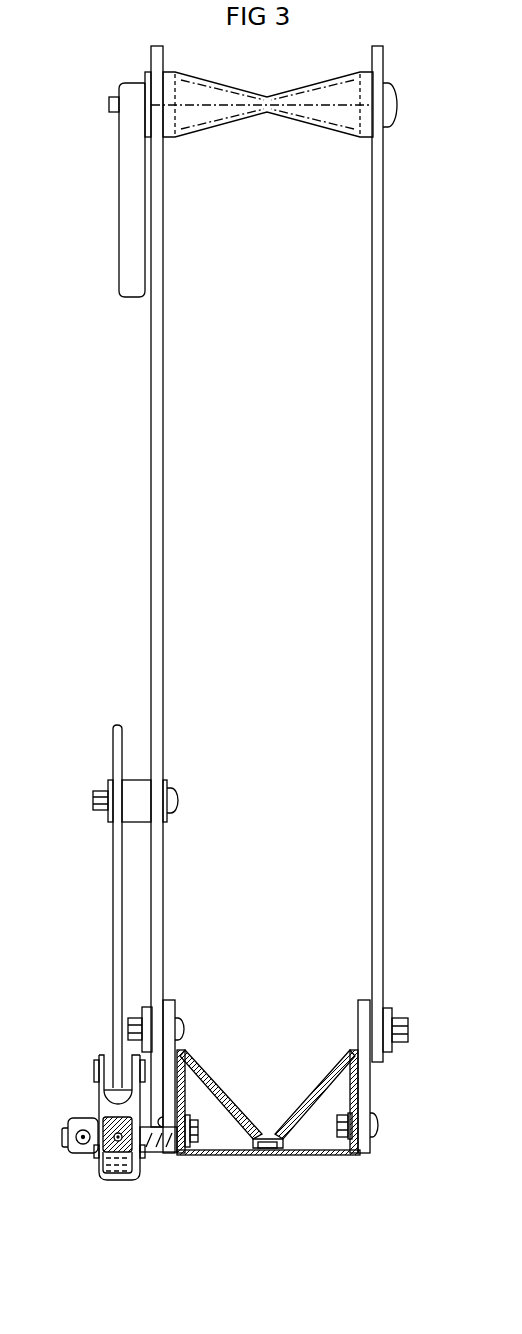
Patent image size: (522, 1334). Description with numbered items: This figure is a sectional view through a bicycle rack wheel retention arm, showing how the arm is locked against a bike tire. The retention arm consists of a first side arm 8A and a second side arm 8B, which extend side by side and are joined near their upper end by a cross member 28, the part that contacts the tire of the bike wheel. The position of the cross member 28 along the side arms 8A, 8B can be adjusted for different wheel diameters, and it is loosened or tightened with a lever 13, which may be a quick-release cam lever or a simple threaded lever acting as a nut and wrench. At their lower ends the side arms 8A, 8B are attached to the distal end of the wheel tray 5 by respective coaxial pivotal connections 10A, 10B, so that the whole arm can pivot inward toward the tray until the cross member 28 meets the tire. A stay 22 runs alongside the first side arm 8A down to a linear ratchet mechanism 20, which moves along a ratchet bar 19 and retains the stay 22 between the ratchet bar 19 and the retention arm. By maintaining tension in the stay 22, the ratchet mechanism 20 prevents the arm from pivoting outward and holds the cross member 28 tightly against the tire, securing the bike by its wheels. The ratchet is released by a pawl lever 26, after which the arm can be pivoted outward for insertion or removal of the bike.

The wheel tray 5 is at (248, 1125).
The first side arm 8A is at (153, 403).
The second side arm 8B is at (381, 403).
The coaxial pivotal connection 10A is at (180, 1028).
The coaxial pivotal connection 10B is at (357, 1030).
The lever 13 is at (127, 209).
The ratchet bar 19 is at (103, 1123).
The linear ratchet mechanism 20 is at (47, 1090).
The stay 22 is at (118, 919).
The pawl lever 26 is at (77, 1128).
The cross member 28 is at (333, 83).